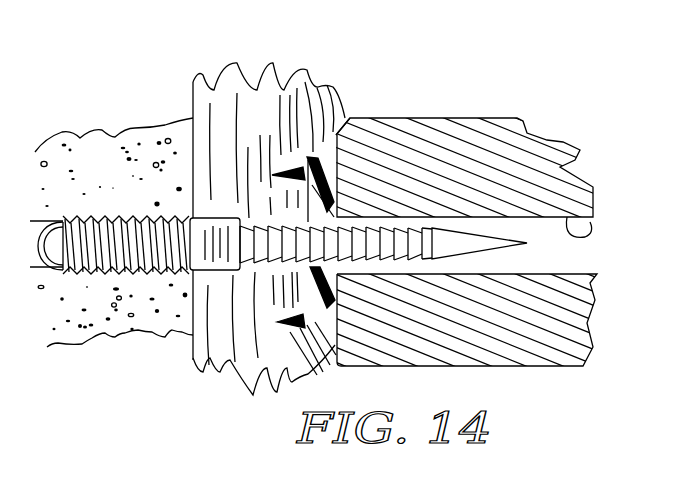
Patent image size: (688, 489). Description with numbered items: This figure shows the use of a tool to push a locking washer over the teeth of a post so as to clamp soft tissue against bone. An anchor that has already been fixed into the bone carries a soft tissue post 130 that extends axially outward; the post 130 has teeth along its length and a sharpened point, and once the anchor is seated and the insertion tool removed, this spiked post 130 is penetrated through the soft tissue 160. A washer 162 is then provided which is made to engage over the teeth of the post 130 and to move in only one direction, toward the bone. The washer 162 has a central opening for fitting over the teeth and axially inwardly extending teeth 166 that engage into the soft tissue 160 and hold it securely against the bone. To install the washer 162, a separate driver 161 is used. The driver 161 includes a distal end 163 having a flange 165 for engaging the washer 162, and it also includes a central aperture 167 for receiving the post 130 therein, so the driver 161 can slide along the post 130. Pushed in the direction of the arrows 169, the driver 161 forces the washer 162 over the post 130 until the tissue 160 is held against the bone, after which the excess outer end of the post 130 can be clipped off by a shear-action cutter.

The soft tissue post 130 is at (506, 231).
The soft tissue 160 is at (267, 88).
The driver 161 is at (442, 118).
The washer 162 is at (320, 206).
The distal end 163 is at (346, 106).
The flange 165 is at (310, 332).
The teeth 166 is at (293, 170).
The central aperture 167 is at (593, 262).
The arrows 169 is at (466, 195).